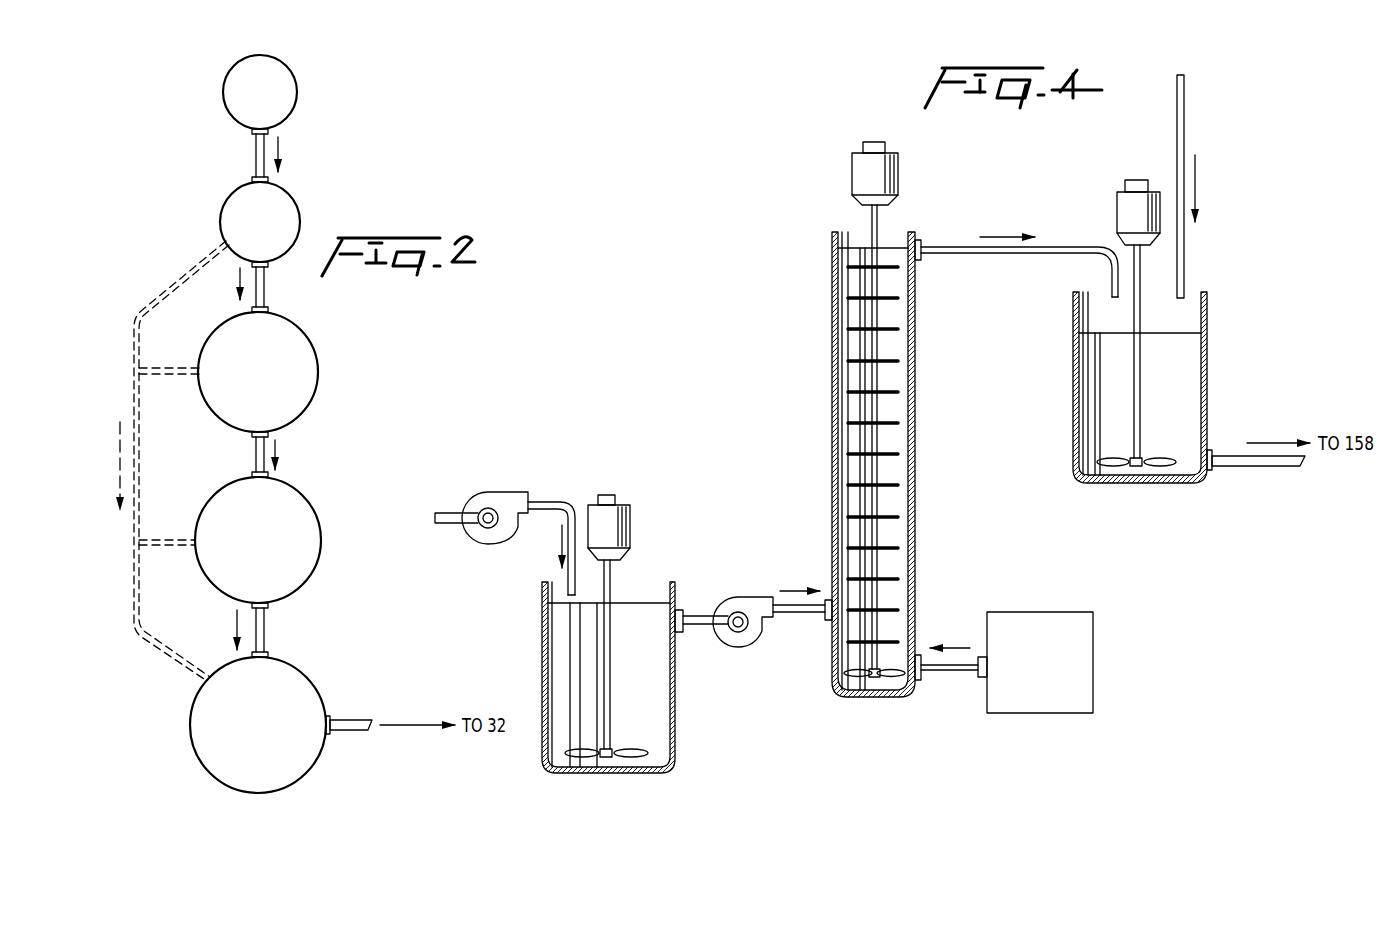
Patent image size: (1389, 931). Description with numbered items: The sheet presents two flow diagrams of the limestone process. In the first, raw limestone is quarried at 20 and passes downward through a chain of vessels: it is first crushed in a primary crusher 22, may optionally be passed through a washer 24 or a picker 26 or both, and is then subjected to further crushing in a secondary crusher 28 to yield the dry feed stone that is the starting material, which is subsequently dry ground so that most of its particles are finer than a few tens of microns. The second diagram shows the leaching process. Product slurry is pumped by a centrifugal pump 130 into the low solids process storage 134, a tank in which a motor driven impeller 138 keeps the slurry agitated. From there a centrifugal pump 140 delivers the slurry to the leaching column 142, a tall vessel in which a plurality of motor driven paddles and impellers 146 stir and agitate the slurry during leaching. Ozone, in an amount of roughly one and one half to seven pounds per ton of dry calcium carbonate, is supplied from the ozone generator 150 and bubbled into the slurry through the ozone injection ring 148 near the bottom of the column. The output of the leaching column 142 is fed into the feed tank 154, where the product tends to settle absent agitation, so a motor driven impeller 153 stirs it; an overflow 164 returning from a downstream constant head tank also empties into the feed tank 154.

In FIG. 2, the quarry 20 is at (297, 83).
In FIG. 2, the primary crusher 22 is at (230, 202).
In FIG. 2, the washer 24 is at (317, 360).
In FIG. 2, the picker 26 is at (297, 500).
In FIG. 2, the secondary crusher 28 is at (200, 723).
In FIG. 4, the centrifugal pump 130 is at (483, 495).
In FIG. 4, the low solids process storage 134 is at (542, 633).
In FIG. 4, the motor driven impeller 138 is at (580, 755).
In FIG. 4, the centrifugal pump 140 is at (743, 637).
In FIG. 4, the leaching column 142 is at (832, 372).
In FIG. 4, the motor driven paddles and impellers 146 is at (898, 451).
In FIG. 4, the ozone injection ring 148 is at (888, 678).
In FIG. 4, the ozone generator 150 is at (1093, 648).
In FIG. 4, the motor driven impeller 153 is at (1120, 467).
In FIG. 4, the feed tank 154 is at (1207, 365).
In FIG. 4, the overflow 164 is at (1185, 132).